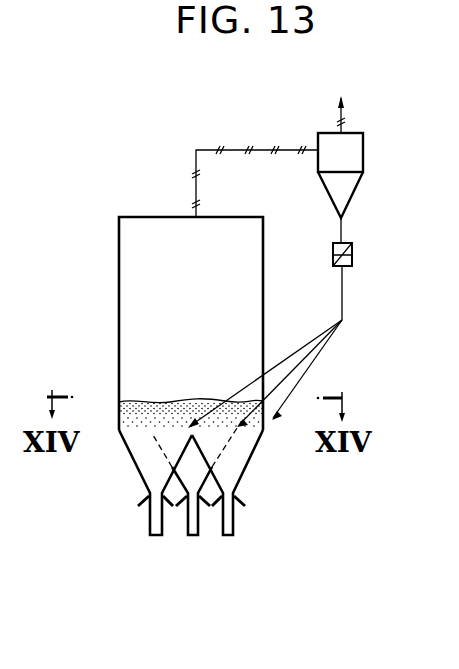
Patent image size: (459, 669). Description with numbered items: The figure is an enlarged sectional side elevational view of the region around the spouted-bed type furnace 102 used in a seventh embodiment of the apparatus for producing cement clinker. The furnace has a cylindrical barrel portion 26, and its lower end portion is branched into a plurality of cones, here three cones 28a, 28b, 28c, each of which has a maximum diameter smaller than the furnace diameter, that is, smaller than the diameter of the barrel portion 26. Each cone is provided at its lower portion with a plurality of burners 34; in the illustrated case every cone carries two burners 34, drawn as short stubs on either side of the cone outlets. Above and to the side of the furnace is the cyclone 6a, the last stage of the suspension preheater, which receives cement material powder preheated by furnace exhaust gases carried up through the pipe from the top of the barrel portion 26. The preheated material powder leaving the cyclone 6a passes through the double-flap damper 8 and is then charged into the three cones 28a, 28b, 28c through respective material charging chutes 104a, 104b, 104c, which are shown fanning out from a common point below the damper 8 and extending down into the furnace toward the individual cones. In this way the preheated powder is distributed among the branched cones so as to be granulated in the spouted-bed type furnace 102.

The cyclone 6a is at (364, 158).
The double-flap damper 8 is at (353, 257).
The barrel portion 26 is at (119, 272).
The spouted-bed type furnace 102 is at (119, 318).
The material charging chute 104a is at (248, 386).
The material charging chute 104b is at (311, 368).
The material charging chute 104c is at (300, 362).
The cone 28a is at (143, 462).
The cone 28b is at (243, 466).
The cone 28c is at (179, 478).
The burner 34 is at (243, 508).